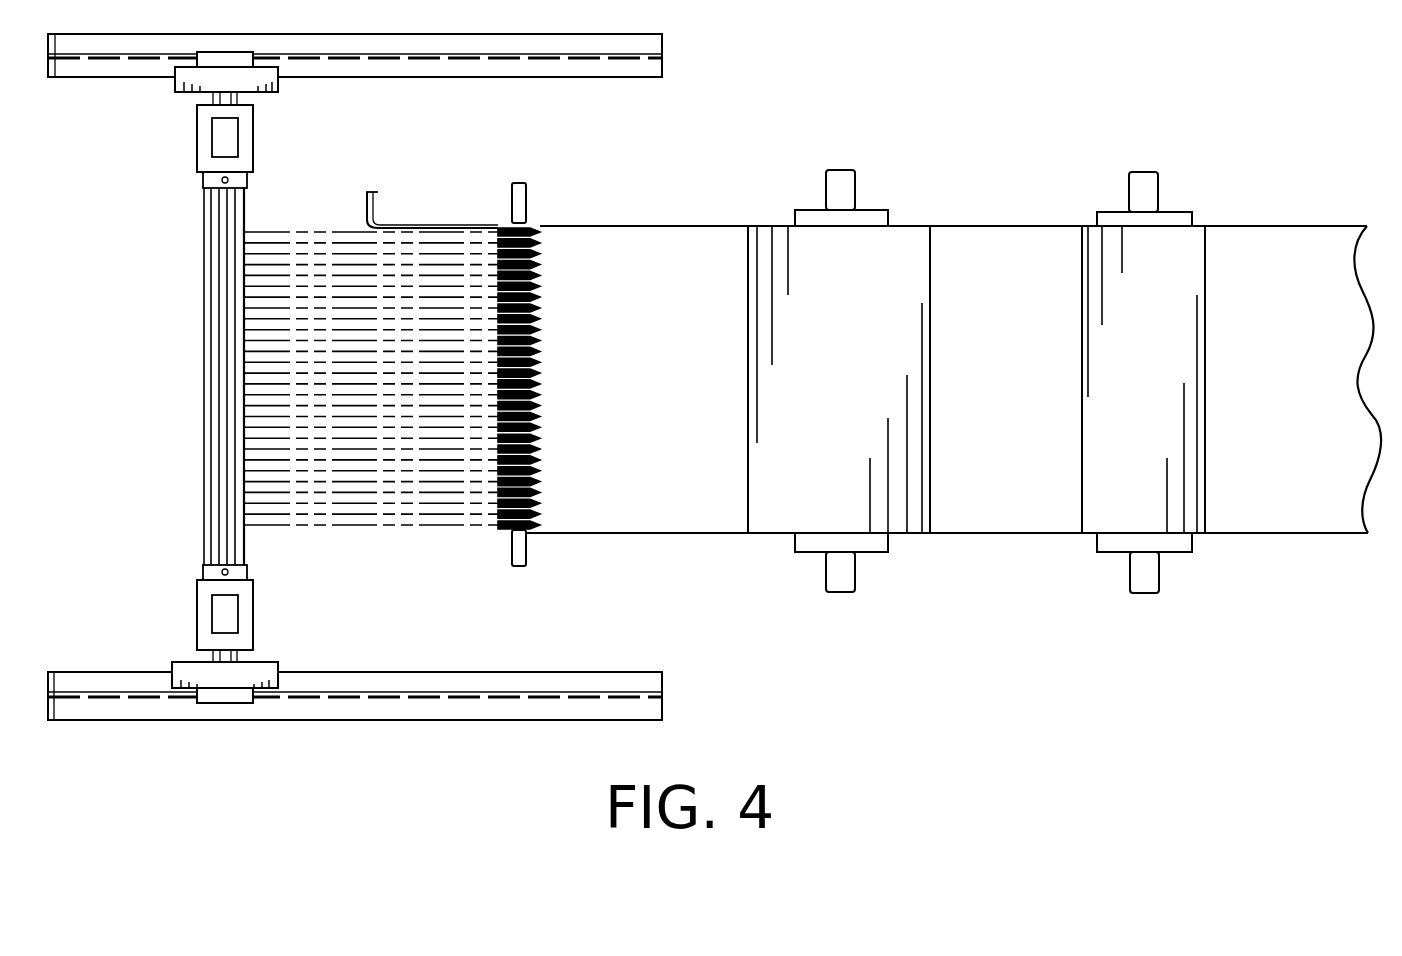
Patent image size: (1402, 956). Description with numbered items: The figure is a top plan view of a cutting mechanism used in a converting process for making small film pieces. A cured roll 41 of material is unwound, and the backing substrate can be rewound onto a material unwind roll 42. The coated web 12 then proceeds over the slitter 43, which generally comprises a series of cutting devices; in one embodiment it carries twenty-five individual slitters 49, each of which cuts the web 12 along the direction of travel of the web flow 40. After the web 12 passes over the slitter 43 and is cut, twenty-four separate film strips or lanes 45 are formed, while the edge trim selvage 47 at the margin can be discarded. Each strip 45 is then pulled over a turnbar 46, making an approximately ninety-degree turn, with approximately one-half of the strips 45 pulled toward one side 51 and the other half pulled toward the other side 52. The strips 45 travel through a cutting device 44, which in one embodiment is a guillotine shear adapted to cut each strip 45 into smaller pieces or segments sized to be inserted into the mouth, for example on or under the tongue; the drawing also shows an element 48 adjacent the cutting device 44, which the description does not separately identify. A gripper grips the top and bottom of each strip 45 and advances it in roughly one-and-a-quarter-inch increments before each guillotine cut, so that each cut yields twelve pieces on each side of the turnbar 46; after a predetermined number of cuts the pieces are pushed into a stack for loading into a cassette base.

The coated web 12 is at (666, 535).
The web flow 40 is at (226, 767).
The cured roll 41 is at (1175, 212).
The material unwind roll 42 is at (875, 210).
The slitter 43 is at (515, 567).
The cutting device 44 is at (275, 668).
The film strips 45 is at (312, 234).
The turnbar 46 is at (204, 537).
The edge trim selvage 47 is at (372, 190).
The rail 48 is at (662, 68).
The slitters 49 is at (535, 225).
The one side 51 is at (190, 270).
The other side 52 is at (190, 436).